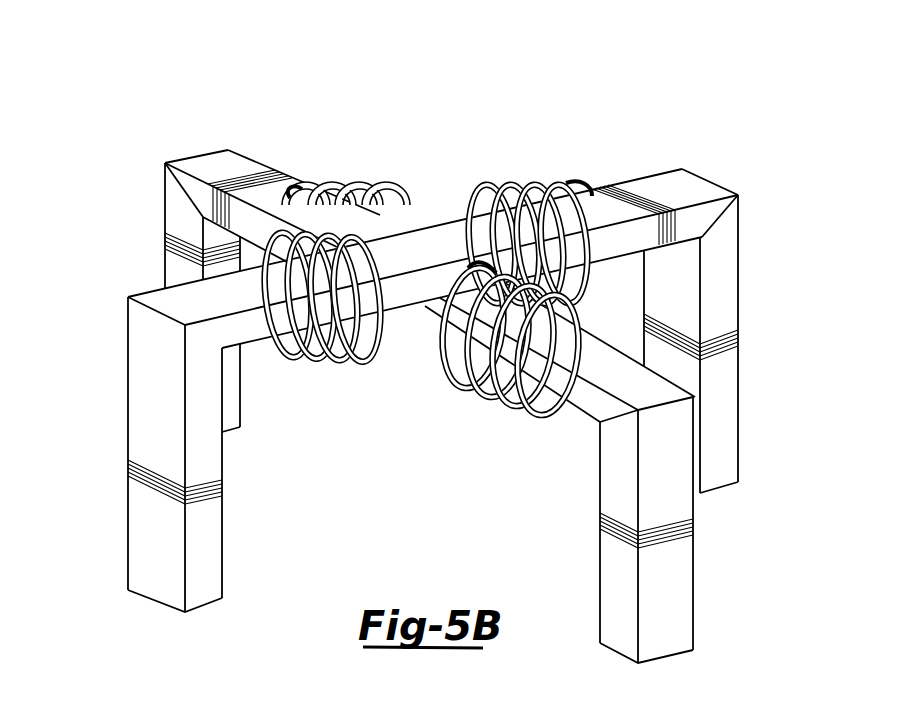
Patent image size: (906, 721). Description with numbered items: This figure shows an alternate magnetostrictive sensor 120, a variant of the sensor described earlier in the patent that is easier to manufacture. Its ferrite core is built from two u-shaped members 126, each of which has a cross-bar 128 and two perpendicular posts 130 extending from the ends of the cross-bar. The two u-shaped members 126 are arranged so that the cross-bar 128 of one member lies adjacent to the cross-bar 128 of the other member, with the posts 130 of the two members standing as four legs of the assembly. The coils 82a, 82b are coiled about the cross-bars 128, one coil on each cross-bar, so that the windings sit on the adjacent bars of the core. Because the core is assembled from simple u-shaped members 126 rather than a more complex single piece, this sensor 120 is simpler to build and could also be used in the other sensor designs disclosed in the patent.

The magnetostrictive sensor 120 is at (394, 80).
The u-shaped member 126 is at (437, 196).
The cross-bar 128 is at (207, 150).
The perpendicular posts 130 is at (238, 413).
The coil 82a is at (363, 208).
The coil 82b is at (503, 180).